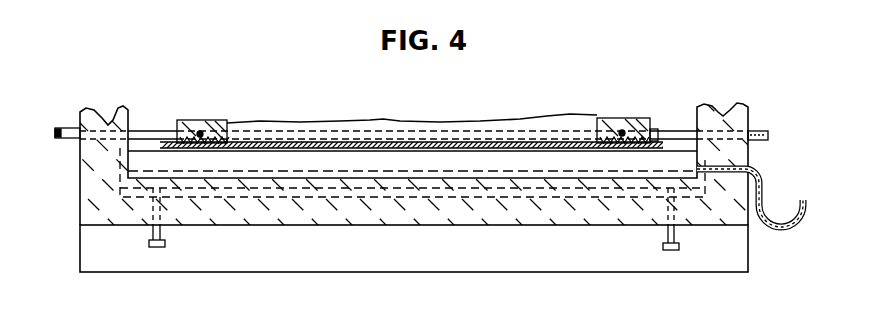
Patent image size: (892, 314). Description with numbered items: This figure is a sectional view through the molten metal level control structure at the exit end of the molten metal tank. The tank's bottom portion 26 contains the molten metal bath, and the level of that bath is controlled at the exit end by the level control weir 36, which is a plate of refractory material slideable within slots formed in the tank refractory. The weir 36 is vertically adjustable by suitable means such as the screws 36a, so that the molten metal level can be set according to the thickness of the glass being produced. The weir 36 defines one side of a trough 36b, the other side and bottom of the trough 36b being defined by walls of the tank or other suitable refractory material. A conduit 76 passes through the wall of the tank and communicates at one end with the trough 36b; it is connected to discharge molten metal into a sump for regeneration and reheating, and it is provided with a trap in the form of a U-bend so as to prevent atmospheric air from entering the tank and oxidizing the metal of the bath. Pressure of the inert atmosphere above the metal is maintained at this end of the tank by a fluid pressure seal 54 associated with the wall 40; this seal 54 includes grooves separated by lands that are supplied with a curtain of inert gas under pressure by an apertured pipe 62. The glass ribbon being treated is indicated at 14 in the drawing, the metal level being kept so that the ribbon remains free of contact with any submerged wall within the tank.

The plate 14 is at (425, 142).
The bottom portion 26 is at (80, 253).
The level control weir 36 is at (685, 157).
The screws 36a is at (160, 247).
The trough 36b is at (143, 175).
The wall 40 is at (193, 128).
The seal 54 is at (657, 129).
The apertured pipe 62 is at (68, 130).
The conduit 76 is at (768, 181).